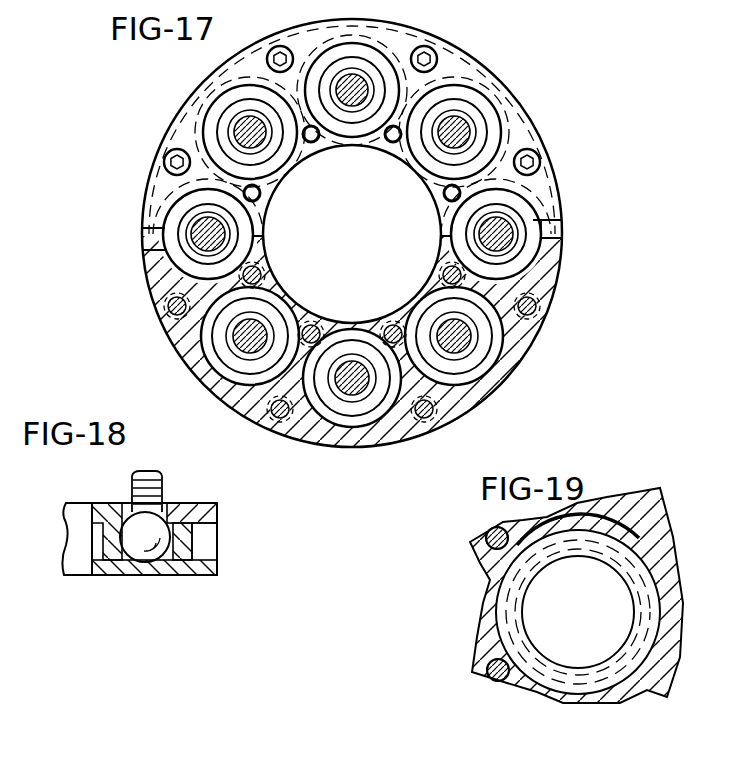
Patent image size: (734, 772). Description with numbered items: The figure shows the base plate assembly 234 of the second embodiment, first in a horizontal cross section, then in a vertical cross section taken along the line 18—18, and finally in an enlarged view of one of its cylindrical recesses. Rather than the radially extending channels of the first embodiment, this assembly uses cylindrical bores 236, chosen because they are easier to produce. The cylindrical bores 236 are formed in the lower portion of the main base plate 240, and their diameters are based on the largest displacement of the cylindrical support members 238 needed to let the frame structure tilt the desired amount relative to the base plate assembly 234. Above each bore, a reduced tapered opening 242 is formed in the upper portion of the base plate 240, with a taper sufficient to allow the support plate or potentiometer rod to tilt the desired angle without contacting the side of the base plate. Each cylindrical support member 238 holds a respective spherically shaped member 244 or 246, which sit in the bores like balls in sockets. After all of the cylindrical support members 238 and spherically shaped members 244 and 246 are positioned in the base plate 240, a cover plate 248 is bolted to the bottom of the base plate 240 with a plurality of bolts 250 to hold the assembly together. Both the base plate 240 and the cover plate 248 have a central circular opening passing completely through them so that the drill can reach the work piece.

In FIG. 17, the section line 18— 18 is at (490, 88).
In FIG. 17, the base plate assembly 234 is at (140, 149).
In FIG. 17, the cylindrical bore 236 is at (357, 260).
In FIG. 18, the cylindrical bore 236 is at (171, 542).
In FIG. 19, the cylindrical bore 236 is at (558, 625).
In FIG. 17, the cylindrical support member 238 is at (480, 363).
In FIG. 18, the cylindrical support member 238 is at (194, 533).
In FIG. 19, the cylindrical support member 238 is at (556, 672).
In FIG. 18, the main base plate 240 is at (205, 507).
In FIG. 17, the reduced tapered opening 242 is at (495, 115).
In FIG. 18, the reduced tapered opening 242 is at (126, 505).
In FIG. 17, the spherically shaped member 244 is at (183, 245).
In FIG. 18, the spherically shaped member 244 is at (137, 553).
In FIG. 17, the spherically shaped member 246 is at (217, 118).
In FIG. 18, the cover plate 248 is at (173, 567).
In FIG. 17, the bolt 250 is at (190, 230).